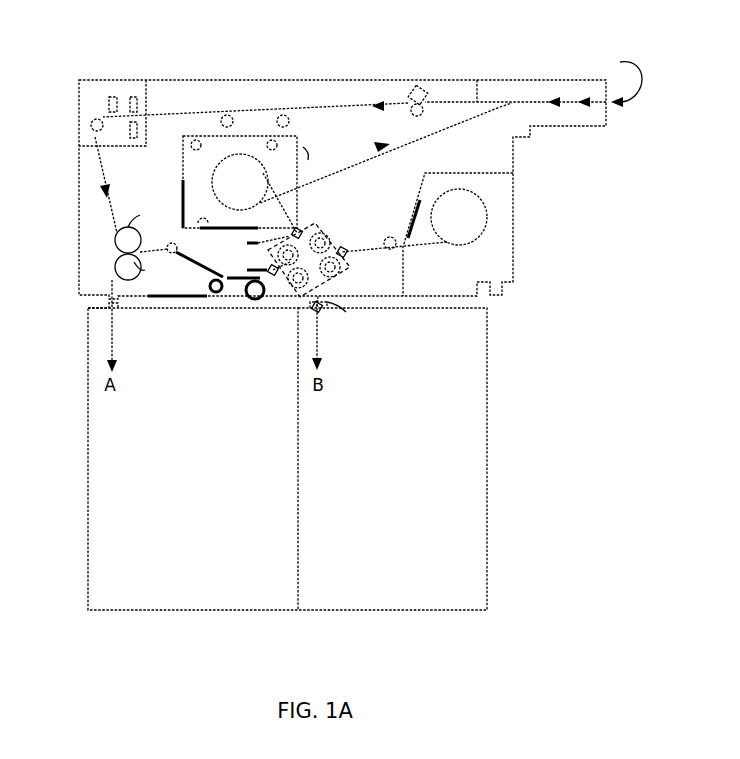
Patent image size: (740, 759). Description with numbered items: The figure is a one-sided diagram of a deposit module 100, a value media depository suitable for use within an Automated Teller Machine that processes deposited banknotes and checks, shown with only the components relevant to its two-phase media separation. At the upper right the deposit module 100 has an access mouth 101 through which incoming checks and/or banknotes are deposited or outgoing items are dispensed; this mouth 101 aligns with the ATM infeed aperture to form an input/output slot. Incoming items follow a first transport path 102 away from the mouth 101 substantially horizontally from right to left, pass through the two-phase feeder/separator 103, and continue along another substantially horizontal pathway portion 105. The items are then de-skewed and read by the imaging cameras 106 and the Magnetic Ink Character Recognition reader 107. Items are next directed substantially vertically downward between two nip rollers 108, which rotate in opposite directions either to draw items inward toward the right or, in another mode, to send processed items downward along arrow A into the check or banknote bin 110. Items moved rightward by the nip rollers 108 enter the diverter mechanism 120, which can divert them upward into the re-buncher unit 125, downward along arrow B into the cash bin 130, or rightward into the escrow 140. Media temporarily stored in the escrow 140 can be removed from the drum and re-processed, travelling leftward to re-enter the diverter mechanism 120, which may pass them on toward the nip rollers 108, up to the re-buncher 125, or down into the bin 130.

The deposit module 100 is at (212, 80).
The access mouth 101 is at (607, 75).
The first transport path 102 is at (481, 60).
The media sensor/feed device 103 is at (408, 86).
The pathway portion 105 is at (252, 113).
The imaging cameras 106 is at (133, 97).
The Magnetic Ink Character Recognition reader 107 is at (113, 97).
The nip rollers 108 is at (128, 228).
The check or banknote bin 110 is at (193, 456).
The diverter mechanism 120 is at (331, 232).
The re-buncher unit 125 is at (386, 153).
The cash bin 130 is at (392, 456).
The escrow 140 is at (507, 218).